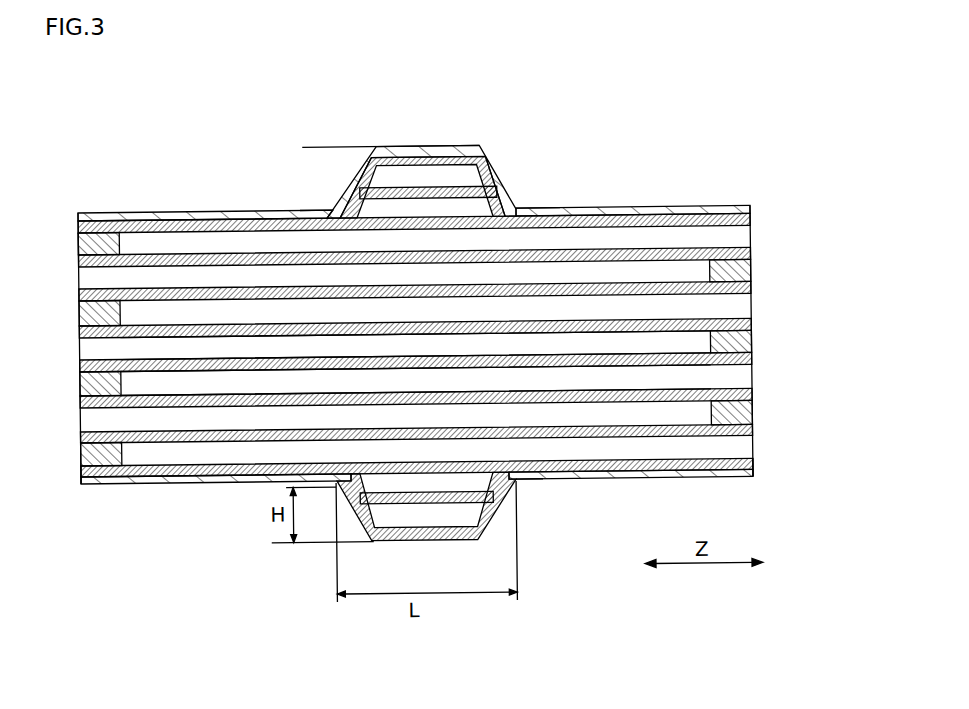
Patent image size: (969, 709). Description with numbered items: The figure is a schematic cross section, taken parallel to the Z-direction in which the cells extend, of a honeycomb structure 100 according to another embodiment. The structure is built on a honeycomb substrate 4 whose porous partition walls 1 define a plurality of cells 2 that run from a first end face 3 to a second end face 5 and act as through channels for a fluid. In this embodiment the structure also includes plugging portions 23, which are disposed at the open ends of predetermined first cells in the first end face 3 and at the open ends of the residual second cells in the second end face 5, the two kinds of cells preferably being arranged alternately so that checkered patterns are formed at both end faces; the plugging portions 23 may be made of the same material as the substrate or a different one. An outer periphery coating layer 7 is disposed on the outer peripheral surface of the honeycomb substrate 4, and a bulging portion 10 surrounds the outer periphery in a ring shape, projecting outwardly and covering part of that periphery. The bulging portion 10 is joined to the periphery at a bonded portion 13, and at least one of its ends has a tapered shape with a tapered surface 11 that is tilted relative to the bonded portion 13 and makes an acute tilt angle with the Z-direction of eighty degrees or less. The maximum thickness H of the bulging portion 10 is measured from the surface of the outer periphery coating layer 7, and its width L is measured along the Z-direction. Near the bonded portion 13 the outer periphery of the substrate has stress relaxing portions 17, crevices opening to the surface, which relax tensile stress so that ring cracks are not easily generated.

The honeycomb structure 100 is at (750, 75).
The partition walls 1 is at (485, 213).
The cells 2 is at (513, 213).
The first end face 3 is at (77, 481).
The honeycomb substrate 4 is at (150, 206).
The second end face 5 is at (749, 481).
The outer periphery coating layer 7 is at (608, 213).
The bulging portion 10 is at (487, 132).
The tapered surface 11 is at (345, 196).
The bonded portion 13 is at (546, 216).
The stress relaxing portions 17 is at (322, 213).
The plugging portions 23 is at (78, 248).